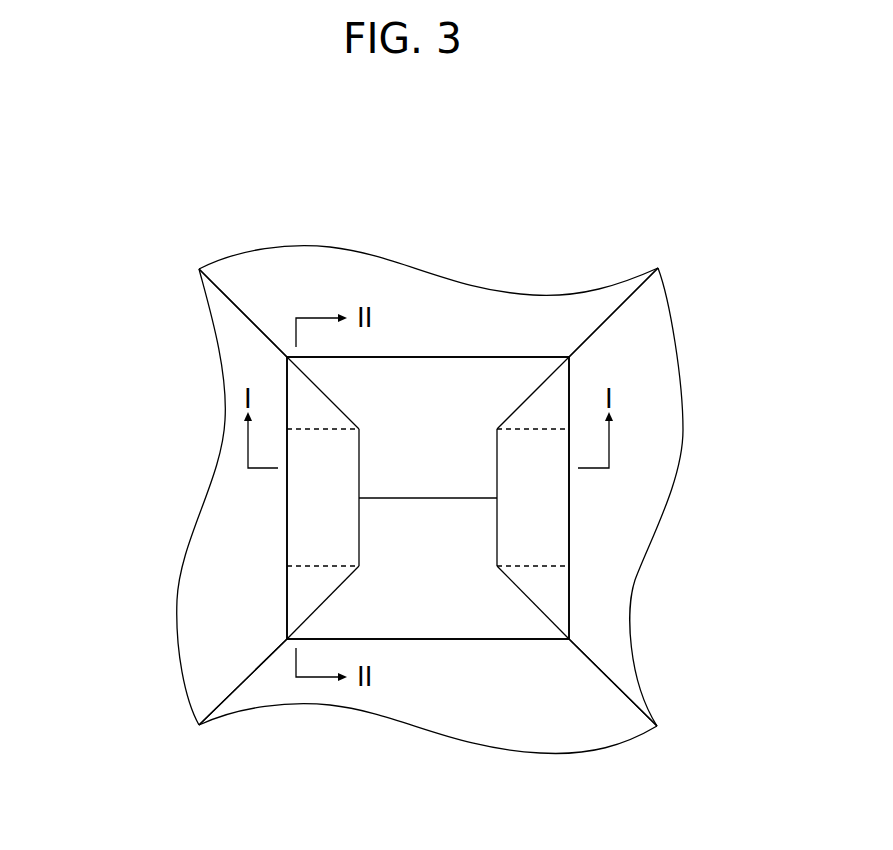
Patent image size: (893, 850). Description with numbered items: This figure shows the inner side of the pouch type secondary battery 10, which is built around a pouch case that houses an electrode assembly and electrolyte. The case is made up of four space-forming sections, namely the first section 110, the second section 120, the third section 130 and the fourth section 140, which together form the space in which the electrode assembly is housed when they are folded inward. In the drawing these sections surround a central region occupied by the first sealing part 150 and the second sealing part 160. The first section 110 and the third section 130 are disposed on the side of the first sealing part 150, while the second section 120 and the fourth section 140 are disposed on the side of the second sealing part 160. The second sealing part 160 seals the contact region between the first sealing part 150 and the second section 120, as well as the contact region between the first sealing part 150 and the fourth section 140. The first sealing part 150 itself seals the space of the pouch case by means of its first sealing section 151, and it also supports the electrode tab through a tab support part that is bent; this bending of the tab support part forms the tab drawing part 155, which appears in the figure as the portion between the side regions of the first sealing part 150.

The pouch type secondary battery 10 is at (68, 155).
The first section 110 is at (428, 295).
The second section 120 is at (225, 489).
The third section 130 is at (428, 703).
The fourth section 140 is at (632, 482).
The first sealing part 150 is at (450, 390).
The first sealing section 151 is at (450, 390).
The tab drawing part 155 is at (468, 498).
The second sealing part 160 is at (298, 548).